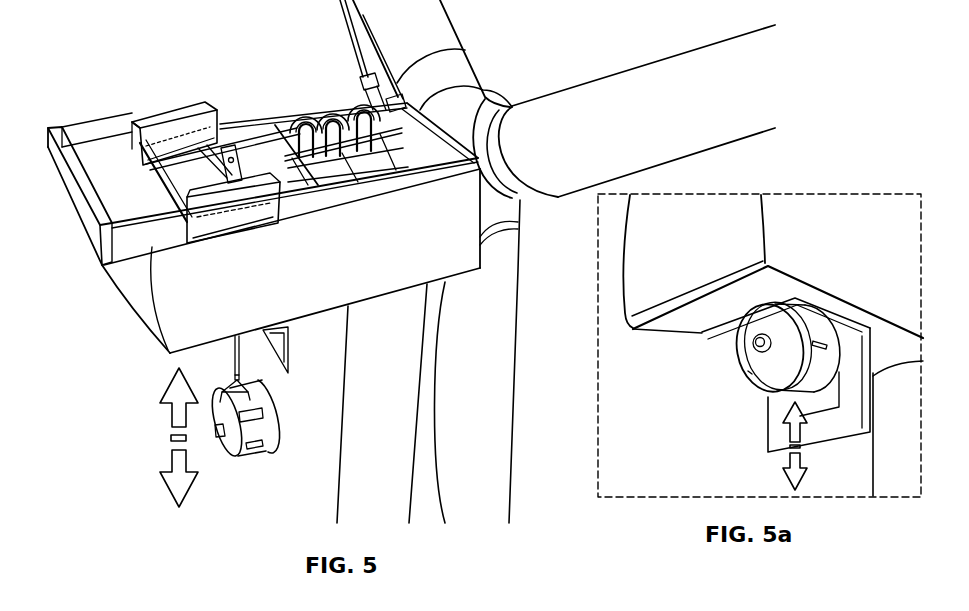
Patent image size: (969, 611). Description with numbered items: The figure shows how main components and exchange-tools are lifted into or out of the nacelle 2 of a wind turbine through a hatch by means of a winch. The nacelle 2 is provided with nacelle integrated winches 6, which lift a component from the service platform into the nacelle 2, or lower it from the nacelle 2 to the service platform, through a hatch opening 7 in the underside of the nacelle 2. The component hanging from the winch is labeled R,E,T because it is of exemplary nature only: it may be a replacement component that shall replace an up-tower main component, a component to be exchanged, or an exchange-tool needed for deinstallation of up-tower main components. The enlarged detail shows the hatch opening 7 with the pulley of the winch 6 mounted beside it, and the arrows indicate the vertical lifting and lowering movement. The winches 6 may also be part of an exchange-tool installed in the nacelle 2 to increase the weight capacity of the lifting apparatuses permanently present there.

In FIG. 5, the nacelle integrated winch 6 is at (317, 110).
In FIG. 5a, the nacelle 2 is at (873, 252).
In FIG. 5a, the hatch opening 7 is at (735, 347).
In FIG. 5, the replacement component, component to be exchanged, exchange-tool R,E,T is at (228, 446).
In FIG. 5a, the replacement component, component to be exchanged, exchange-tool R,E,T is at (750, 372).